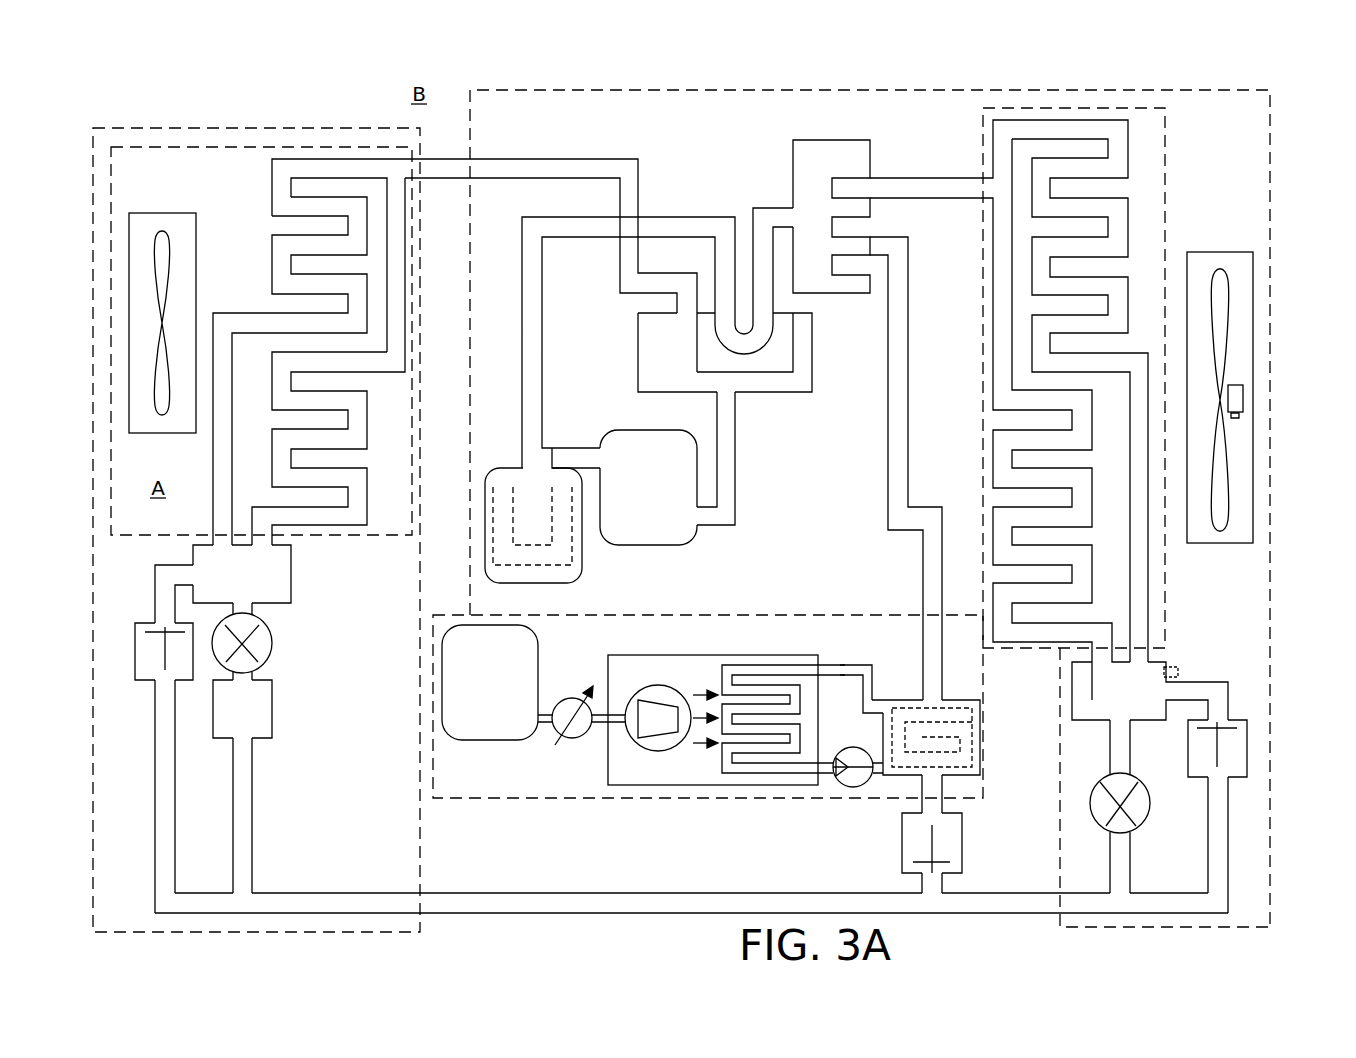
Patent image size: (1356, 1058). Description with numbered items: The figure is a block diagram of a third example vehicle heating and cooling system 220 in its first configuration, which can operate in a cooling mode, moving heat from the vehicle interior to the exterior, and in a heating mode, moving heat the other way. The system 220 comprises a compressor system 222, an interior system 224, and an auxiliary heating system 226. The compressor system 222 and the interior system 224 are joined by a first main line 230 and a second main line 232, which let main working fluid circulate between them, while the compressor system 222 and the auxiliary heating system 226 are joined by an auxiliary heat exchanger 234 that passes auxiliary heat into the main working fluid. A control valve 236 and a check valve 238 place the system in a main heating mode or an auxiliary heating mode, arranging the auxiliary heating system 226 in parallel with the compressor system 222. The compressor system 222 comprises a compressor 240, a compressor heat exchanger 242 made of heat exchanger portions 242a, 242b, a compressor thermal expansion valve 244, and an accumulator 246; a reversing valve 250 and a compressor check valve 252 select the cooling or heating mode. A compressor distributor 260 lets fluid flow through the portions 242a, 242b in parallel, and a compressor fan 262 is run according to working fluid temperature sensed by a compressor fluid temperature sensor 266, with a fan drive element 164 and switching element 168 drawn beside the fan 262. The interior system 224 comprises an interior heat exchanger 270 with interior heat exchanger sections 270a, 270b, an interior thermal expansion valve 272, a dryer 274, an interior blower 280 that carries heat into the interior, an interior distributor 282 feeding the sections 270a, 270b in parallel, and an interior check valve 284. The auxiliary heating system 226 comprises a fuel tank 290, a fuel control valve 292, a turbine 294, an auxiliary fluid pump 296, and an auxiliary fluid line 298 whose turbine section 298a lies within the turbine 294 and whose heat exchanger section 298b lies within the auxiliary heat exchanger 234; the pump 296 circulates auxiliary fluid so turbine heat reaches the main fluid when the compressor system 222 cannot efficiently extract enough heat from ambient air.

The vehicle heating and cooling system 220 is at (1291, 72).
The compressor system 222 is at (1250, 166).
The interior system 224 is at (250, 137).
The auxiliary heating system 226 is at (542, 625).
The first main line 230 is at (372, 175).
The second main line 232 is at (358, 900).
The auxiliary heat exchanger 234 is at (964, 769).
The control valve 236 is at (800, 168).
The check valve 238 is at (950, 846).
The compressor 240 is at (662, 515).
The compressor heat exchanger 242 is at (1152, 130).
The heat exchanger portion 242a is at (1148, 194).
The heat exchanger portion 242b is at (988, 455).
The compressor thermal expansion valve 244 is at (1135, 808).
The accumulator 246 is at (533, 577).
The reversing valve 250 is at (652, 345).
The compressor check valve 252 is at (1235, 750).
The compressor distributor 260 is at (1105, 697).
The compressor fan 262 is at (1222, 295).
The compressor fluid temperature sensor 266 is at (1180, 672).
The interior heat exchanger 270 is at (146, 155).
The interior heat exchanger section 270a is at (195, 306).
The interior heat exchanger section 270b is at (390, 449).
The interior thermal expansion valve 272 is at (255, 650).
The dryer 274 is at (250, 712).
The interior blower 280 is at (170, 250).
The interior distributor 282 is at (270, 585).
The interior check valve 284 is at (160, 630).
The fuel tank 290 is at (513, 727).
The fuel control valve 292 is at (577, 732).
The turbine 294 is at (658, 748).
The auxiliary fluid pump 296 is at (852, 775).
The auxiliary fluid line 298 is at (759, 729).
The turbine section 298a is at (709, 667).
The heat exchanger section 298b is at (975, 727).
The sensor 164 is at (1243, 398).
The sensor 168 is at (1240, 415).